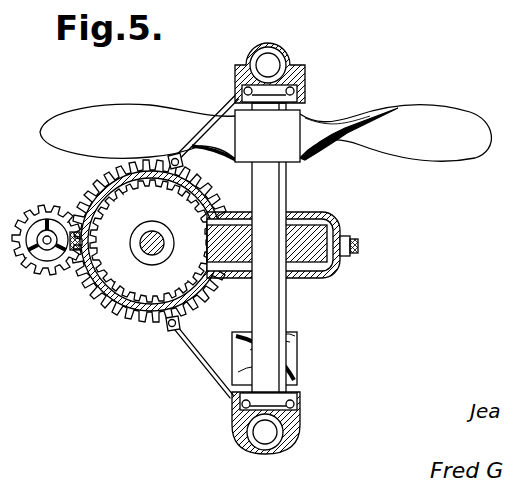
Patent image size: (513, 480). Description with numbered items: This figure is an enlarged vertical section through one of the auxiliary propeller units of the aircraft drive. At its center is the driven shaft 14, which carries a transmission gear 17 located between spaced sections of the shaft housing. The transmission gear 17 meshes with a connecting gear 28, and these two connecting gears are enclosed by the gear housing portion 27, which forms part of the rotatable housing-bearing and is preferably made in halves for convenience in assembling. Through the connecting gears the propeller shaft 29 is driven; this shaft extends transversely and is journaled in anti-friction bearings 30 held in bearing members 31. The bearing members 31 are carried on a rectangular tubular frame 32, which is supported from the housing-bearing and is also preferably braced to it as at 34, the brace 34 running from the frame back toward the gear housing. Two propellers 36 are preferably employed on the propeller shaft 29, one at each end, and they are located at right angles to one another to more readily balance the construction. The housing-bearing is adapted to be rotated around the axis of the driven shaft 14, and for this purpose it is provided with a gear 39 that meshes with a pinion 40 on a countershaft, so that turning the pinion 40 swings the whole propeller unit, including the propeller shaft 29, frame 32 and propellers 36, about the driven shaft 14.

The driven shaft 14 is at (165, 244).
The transmission gear 17 is at (151, 241).
The gear housing portion 27 is at (353, 238).
The connecting gear 28 is at (332, 216).
The propeller shaft 29 is at (270, 202).
The anti-friction bearings 30 is at (305, 92).
The bearing members 31 is at (240, 71).
The rectangular tubular frame 32 is at (270, 64).
The brace 34 is at (202, 365).
The propellers 36 is at (282, 365).
The gear 39 is at (112, 179).
The pinion 40 is at (48, 212).